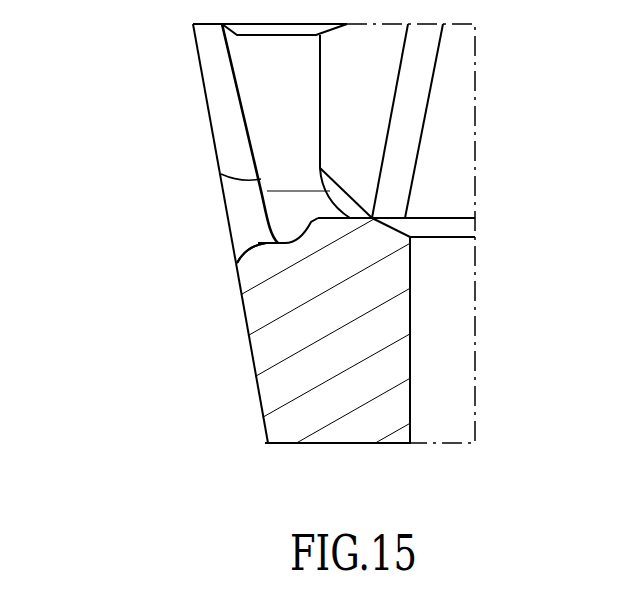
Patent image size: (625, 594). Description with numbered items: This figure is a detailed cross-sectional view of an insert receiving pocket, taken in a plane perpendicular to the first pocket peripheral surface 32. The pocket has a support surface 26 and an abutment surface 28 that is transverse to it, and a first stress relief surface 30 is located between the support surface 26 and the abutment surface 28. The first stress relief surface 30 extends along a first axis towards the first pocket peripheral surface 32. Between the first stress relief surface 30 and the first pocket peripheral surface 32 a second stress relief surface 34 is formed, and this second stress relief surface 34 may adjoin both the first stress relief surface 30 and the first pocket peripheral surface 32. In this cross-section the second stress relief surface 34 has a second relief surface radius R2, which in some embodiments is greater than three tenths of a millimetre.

The support surface 26 is at (383, 218).
The abutment surface 28 is at (272, 107).
The first stress relief surface 30 is at (294, 232).
The first pocket peripheral surface 32 is at (236, 352).
The second stress relief surface 34 is at (224, 265).
The second relief surface radius R2 is at (287, 283).